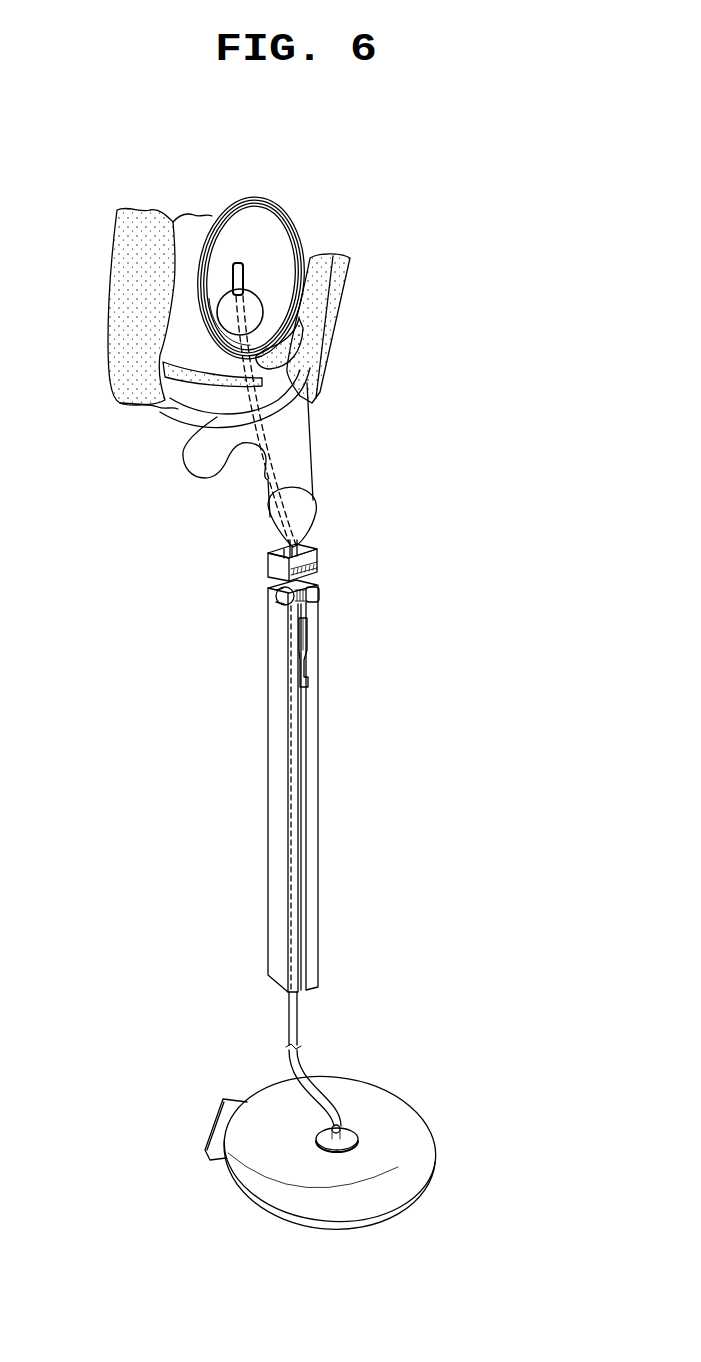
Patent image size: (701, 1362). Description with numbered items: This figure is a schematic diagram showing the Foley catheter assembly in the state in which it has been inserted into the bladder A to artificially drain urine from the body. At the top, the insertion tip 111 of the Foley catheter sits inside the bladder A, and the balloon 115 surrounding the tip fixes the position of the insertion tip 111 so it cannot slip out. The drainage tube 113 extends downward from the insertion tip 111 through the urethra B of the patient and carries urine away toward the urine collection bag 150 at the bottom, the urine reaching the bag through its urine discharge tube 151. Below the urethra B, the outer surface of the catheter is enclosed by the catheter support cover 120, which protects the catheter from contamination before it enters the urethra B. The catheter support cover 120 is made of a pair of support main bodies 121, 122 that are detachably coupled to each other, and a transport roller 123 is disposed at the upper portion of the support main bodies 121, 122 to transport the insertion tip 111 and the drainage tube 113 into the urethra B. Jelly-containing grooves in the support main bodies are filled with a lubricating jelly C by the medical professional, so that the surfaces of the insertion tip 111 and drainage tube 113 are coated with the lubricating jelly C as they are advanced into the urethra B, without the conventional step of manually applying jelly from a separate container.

The bladder A is at (268, 222).
The urethra B is at (295, 410).
The lubricating jelly C is at (317, 570).
The insertion tip 111 is at (248, 283).
The drainage tube 113 is at (287, 468).
The balloon 115 is at (258, 309).
The catheter support cover 120 is at (378, 786).
The support main body 121 is at (280, 790).
The support main body 122 is at (312, 707).
The transport roller 123 is at (343, 614).
The urine collection bag 150 is at (415, 1123).
The urine discharge tube 151 is at (295, 1020).